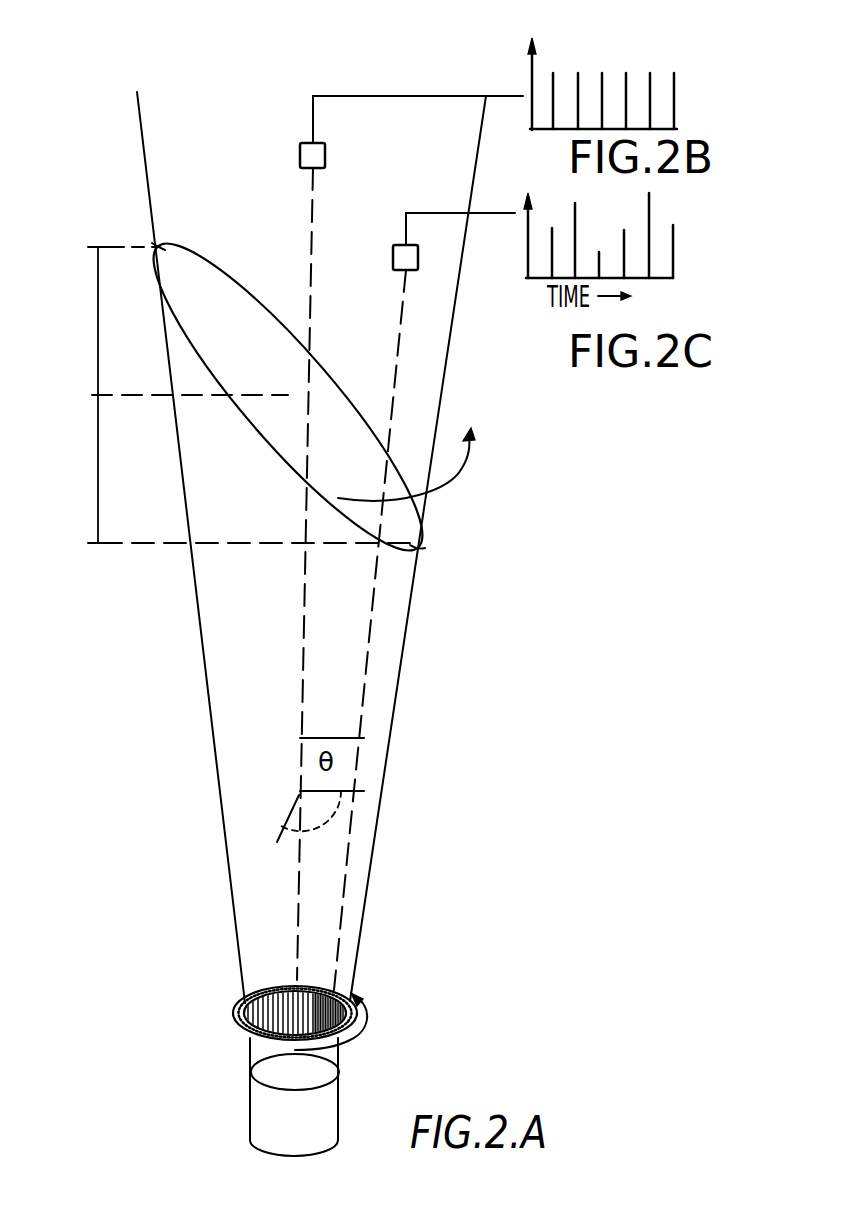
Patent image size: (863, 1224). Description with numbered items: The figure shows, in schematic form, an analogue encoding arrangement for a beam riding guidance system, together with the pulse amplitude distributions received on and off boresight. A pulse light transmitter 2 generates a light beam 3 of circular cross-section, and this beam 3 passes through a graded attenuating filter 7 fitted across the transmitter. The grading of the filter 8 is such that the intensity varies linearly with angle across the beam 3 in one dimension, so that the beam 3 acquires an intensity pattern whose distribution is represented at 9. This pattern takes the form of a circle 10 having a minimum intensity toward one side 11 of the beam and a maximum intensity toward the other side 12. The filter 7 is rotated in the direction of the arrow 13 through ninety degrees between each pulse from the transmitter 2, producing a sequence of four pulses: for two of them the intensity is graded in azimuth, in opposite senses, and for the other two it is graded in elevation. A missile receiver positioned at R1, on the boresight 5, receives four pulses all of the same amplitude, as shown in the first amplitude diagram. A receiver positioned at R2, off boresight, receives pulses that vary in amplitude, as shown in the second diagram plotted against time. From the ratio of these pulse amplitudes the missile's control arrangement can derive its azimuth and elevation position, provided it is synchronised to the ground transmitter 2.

The pulse light transmitter 2 is at (268, 1122).
The light beam 3 is at (217, 783).
The boresight 5 is at (300, 622).
The graded attenuating filter 7 is at (240, 1007).
The grading of the filter 8 is at (292, 1023).
The intensity pattern distribution 9 is at (97, 395).
The circle 10 is at (197, 353).
The minimum intensity side 11 is at (422, 548).
The maximum intensity side 12 is at (158, 246).
The arrow 13 is at (368, 1020).
The receiver position on boresight R1 is at (300, 156).
The receiver position off boresight R2 is at (393, 257).